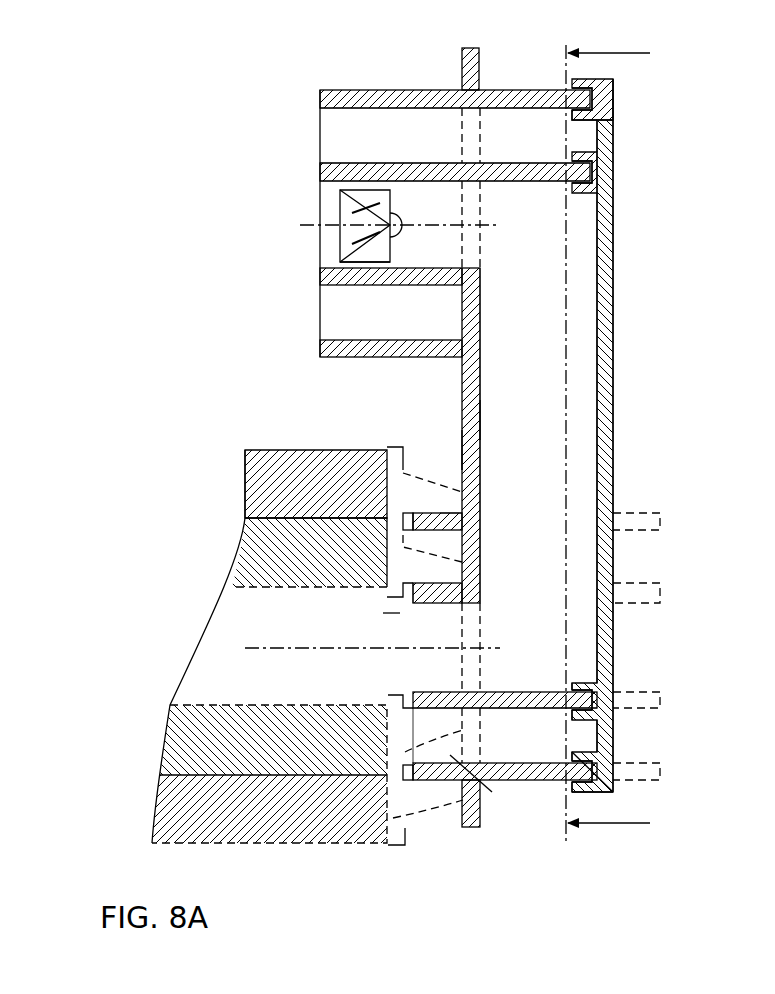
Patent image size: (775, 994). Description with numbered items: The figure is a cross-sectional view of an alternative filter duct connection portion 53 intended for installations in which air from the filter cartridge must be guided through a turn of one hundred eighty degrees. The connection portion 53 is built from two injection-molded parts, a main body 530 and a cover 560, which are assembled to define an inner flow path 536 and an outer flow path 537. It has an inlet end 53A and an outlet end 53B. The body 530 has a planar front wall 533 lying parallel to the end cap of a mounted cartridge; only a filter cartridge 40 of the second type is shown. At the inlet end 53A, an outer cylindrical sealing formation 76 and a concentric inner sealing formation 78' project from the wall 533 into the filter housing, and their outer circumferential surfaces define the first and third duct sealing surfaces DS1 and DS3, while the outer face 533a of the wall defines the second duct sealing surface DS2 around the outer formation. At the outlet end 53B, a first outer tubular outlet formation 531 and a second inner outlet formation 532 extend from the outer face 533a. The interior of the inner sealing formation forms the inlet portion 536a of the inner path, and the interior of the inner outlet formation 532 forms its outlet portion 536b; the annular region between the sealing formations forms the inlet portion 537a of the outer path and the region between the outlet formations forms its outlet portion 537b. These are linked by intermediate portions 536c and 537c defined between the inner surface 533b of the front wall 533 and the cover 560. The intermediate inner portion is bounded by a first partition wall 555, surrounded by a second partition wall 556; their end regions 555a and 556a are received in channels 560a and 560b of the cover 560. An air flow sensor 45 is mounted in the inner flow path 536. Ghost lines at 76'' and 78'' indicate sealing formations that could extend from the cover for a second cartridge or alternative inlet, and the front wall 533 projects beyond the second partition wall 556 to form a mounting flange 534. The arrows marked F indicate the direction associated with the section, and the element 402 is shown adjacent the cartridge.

The main body 530 is at (322, 97).
The first outer cylindrical tubular outlet formation 531 is at (383, 95).
The second inner cylindrical tubular outlet formation 532 is at (322, 172).
The front wall 533 is at (462, 377).
The outer face of front wall 533a is at (462, 450).
The inner surface of front wall 533b is at (480, 423).
The mounting flange 534 is at (462, 55).
The inner flow path 536 is at (593, 462).
The inlet portion of inner flow path 536a is at (438, 683).
The outlet portion of inner flow path 536b is at (454, 206).
The intermediate portion of inner flow path 536c is at (545, 305).
The outer flow path 537 is at (597, 666).
The inlet portion of outer flow path 537a is at (546, 526).
The outlet portion of outer flow path 537b is at (418, 143).
The intermediate portion of outer flow path 537c is at (553, 143).
The first partition wall 555 is at (508, 182).
The end region of first partition wall 555a is at (590, 177).
The second partition wall 556 is at (505, 97).
The end region of second partition wall 556a is at (590, 100).
The cover 560 is at (613, 408).
The channel 560a is at (590, 173).
The channel 560b is at (590, 105).
The connection portion 53 is at (642, 329).
The inlet end 53A is at (181, 646).
The outlet end 53B is at (340, 244).
The air flow sensor 45 is at (355, 203).
The filter cartridge of the second type 40 is at (280, 528).
The inlet end region of outer duct portion 76 is at (327, 482).
The outer sealing formation on cover 76'' is at (674, 536).
The second inner cylindrical tubular sealing formation 78' is at (380, 638).
The inner sealing formation on cover 78'' is at (674, 605).
The connector 402 is at (410, 807).
The first duct sealing surface DS1 is at (443, 512).
The second duct sealing surface DS2 is at (460, 457).
The third duct sealing surface DS3 is at (423, 708).
The force direction F is at (609, 440).